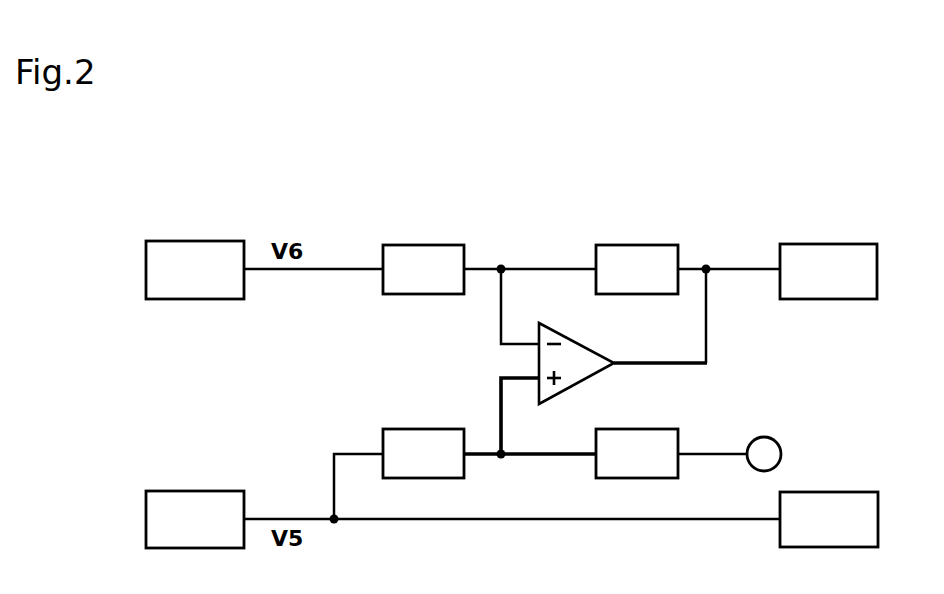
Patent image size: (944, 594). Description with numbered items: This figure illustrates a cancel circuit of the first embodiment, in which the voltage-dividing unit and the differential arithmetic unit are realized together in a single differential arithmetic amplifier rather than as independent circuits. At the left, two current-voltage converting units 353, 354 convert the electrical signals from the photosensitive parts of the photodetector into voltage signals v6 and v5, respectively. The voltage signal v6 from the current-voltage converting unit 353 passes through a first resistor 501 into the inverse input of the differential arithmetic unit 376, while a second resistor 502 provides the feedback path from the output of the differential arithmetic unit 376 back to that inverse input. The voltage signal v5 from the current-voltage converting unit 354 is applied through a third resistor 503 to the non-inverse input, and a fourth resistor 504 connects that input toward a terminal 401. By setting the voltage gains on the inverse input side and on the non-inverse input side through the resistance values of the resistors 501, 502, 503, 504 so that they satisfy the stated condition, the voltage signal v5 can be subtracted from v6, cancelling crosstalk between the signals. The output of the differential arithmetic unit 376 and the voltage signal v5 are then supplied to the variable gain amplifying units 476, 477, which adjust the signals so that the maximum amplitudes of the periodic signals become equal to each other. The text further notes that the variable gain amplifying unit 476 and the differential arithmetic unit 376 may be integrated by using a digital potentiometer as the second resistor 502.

The current-voltage converting unit 353 is at (223, 239).
The current-voltage converting unit 354 is at (223, 489).
The resistor 501 is at (447, 243).
The resistor 502 is at (660, 243).
The resistor 503 is at (449, 427).
The resistor 504 is at (660, 427).
The differential arithmetic unit 376 is at (592, 340).
The terminal 401 is at (766, 436).
The variable gain amplifying unit 476 is at (852, 242).
The variable gain amplifying unit 477 is at (852, 491).